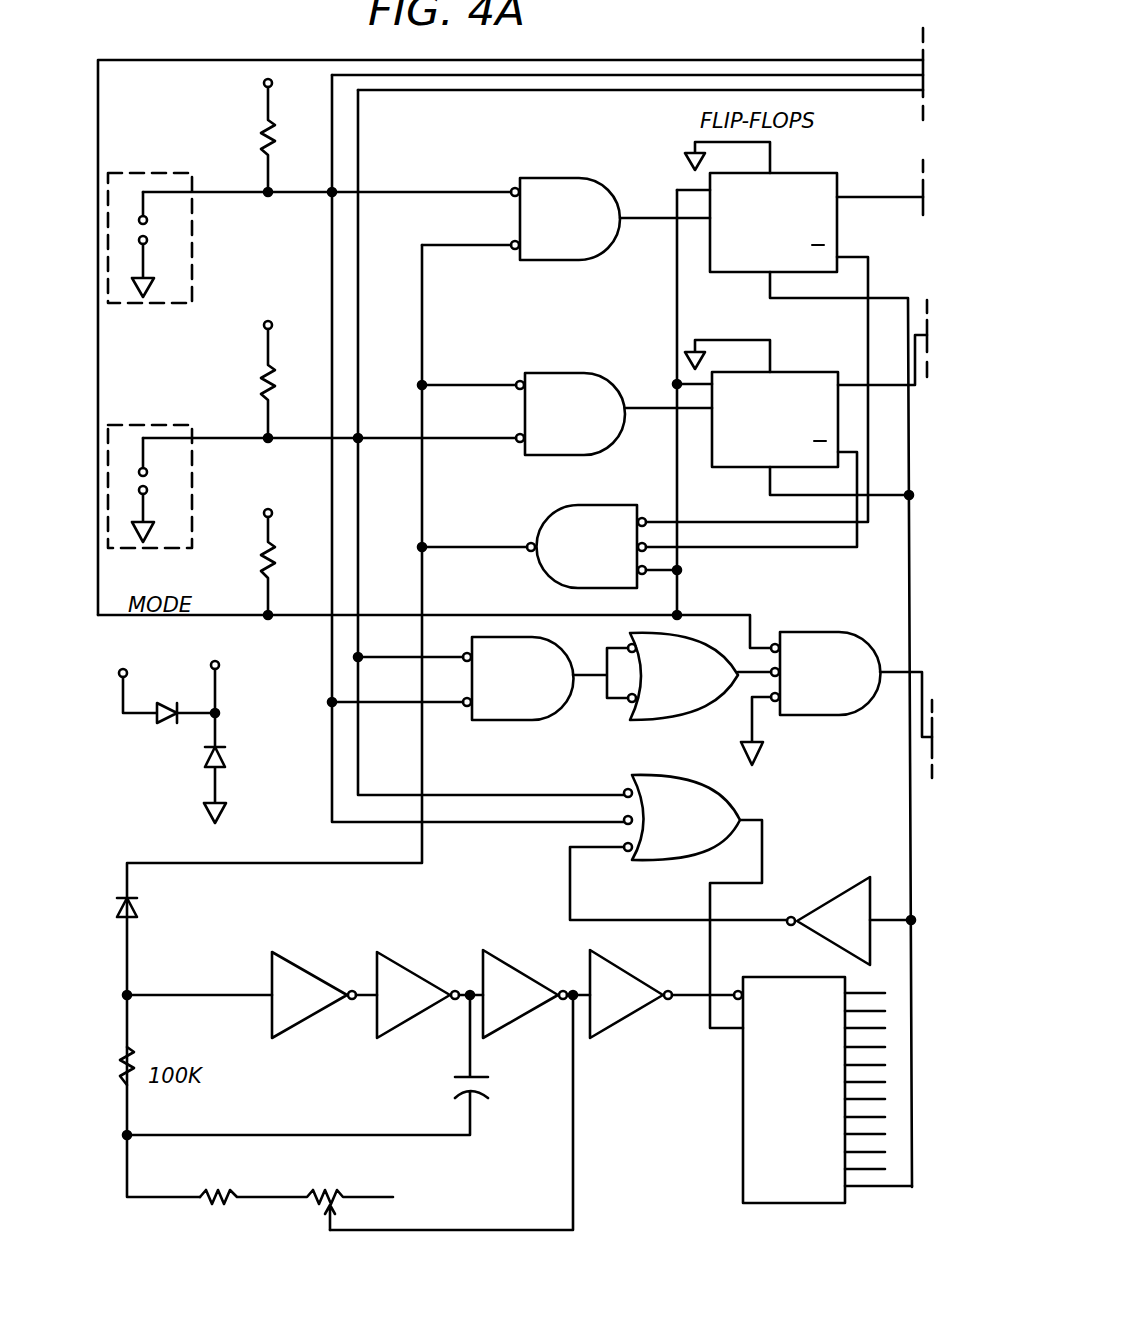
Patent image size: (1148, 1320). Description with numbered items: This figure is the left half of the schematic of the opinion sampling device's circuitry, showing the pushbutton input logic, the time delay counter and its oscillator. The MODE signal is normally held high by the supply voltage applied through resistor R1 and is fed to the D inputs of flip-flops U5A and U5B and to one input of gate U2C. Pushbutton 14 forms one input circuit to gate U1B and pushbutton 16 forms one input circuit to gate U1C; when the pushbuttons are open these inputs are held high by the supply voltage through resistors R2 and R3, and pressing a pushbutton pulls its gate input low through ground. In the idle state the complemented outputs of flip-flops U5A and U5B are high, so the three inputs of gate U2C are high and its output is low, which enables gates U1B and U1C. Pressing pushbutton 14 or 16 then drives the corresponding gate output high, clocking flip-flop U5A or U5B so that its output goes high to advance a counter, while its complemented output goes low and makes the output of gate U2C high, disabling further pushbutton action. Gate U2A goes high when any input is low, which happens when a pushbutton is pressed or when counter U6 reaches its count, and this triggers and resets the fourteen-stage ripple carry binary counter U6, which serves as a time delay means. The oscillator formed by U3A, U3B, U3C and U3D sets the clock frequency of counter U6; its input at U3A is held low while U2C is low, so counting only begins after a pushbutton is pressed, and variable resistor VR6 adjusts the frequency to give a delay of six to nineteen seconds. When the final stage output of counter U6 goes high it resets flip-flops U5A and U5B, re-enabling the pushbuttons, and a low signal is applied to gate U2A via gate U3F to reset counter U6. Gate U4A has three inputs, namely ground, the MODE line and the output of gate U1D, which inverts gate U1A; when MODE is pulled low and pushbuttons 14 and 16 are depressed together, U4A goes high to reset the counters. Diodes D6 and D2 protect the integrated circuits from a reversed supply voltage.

The pushbutton 16 is at (233, 234).
The pushbutton 14 is at (233, 484).
The resistor R1 is at (261, 131).
The resistor R2 is at (262, 368).
The resistor R3 is at (262, 562).
The gate U1A is at (451, 678).
The gate U1B is at (565, 414).
The gate U1C is at (566, 219).
The gate U1D is at (672, 676).
The gate U2A is at (678, 901).
The gate U2C is at (643, 422).
The gate U4A is at (836, 698).
The flip-flop U5A is at (800, 664).
The flip-flop U5B is at (800, 417).
The oscillator gate U3A is at (324, 995).
The oscillator gate U3B is at (430, 995).
The oscillator gate U3C is at (536, 994).
The oscillator gate U3D is at (662, 994).
The gate U3F is at (851, 921).
The ripple carry binary counter U6 is at (770, 977).
The variable resistor VR6 is at (340, 1194).
The diode D2 is at (140, 906).
The diode D6 is at (168, 706).